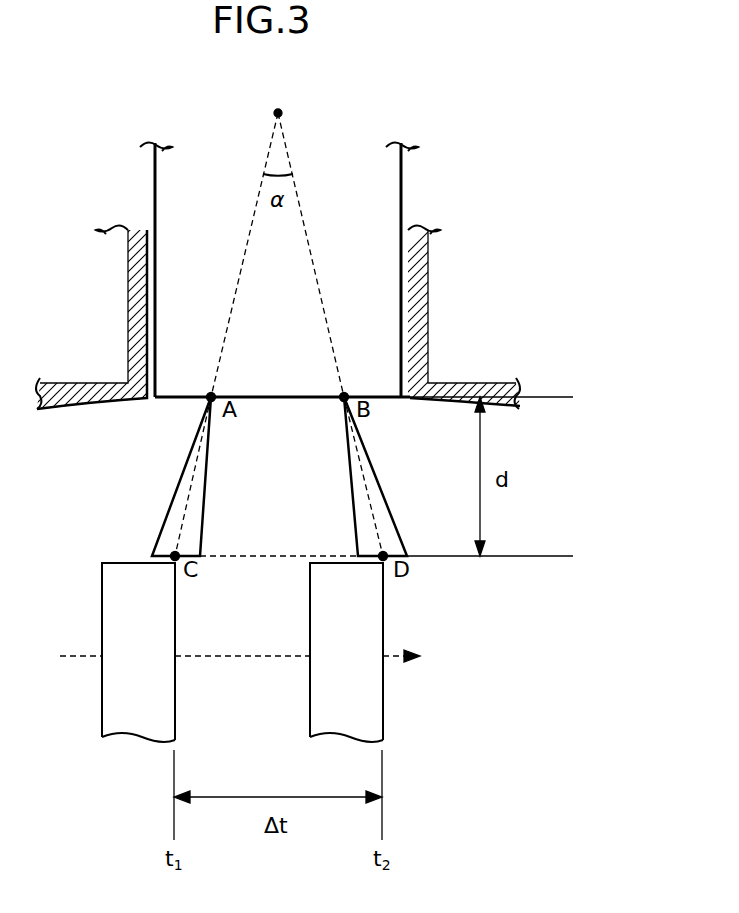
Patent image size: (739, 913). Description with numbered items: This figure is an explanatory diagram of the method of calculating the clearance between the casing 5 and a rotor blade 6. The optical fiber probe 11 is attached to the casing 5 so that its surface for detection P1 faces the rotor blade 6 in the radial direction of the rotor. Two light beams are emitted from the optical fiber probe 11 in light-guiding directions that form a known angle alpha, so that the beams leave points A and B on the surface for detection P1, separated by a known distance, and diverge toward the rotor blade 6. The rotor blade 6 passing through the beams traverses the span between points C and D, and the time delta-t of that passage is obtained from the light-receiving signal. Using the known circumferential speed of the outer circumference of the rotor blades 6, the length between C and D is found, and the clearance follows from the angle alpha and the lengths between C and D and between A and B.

The optical fiber probe 11 is at (401, 176).
The casing 5 is at (498, 405).
The rotor blade 6 is at (383, 608).
The surface for detection P1 is at (178, 400).